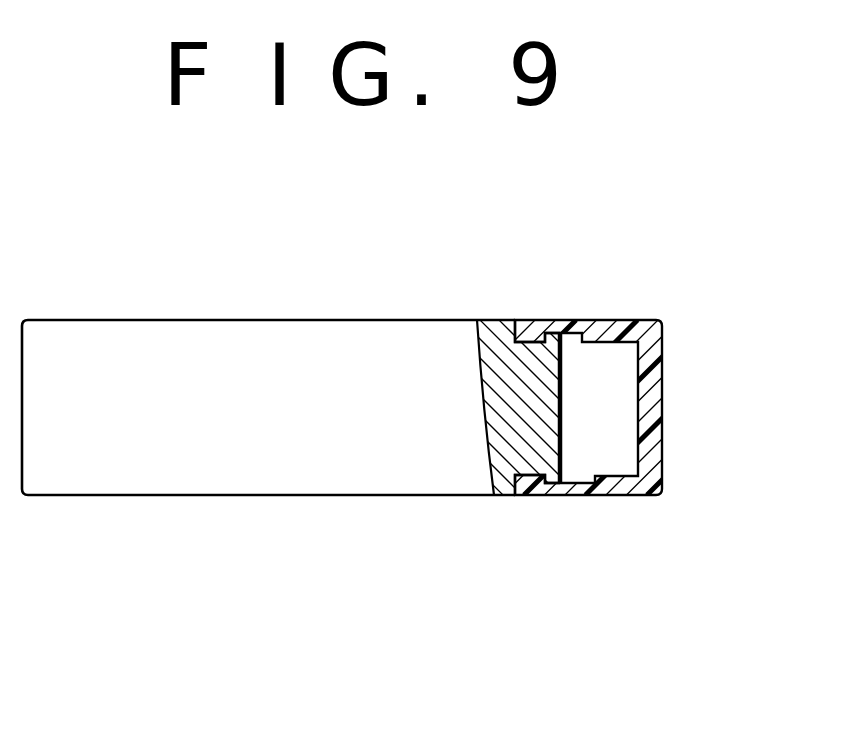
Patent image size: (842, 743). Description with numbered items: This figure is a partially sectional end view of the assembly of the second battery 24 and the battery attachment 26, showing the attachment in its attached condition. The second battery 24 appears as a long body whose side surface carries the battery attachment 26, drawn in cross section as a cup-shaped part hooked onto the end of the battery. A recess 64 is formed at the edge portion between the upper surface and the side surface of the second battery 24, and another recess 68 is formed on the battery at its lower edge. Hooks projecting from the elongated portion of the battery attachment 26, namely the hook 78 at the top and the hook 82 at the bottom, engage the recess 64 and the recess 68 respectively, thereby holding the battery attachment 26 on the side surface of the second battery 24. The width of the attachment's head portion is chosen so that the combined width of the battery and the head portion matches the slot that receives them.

The second battery 24 is at (212, 334).
The battery attachment 26 is at (657, 410).
The recess 64 is at (519, 342).
The recess 68 is at (516, 468).
The hook 78 is at (540, 321).
The hook 82 is at (537, 496).